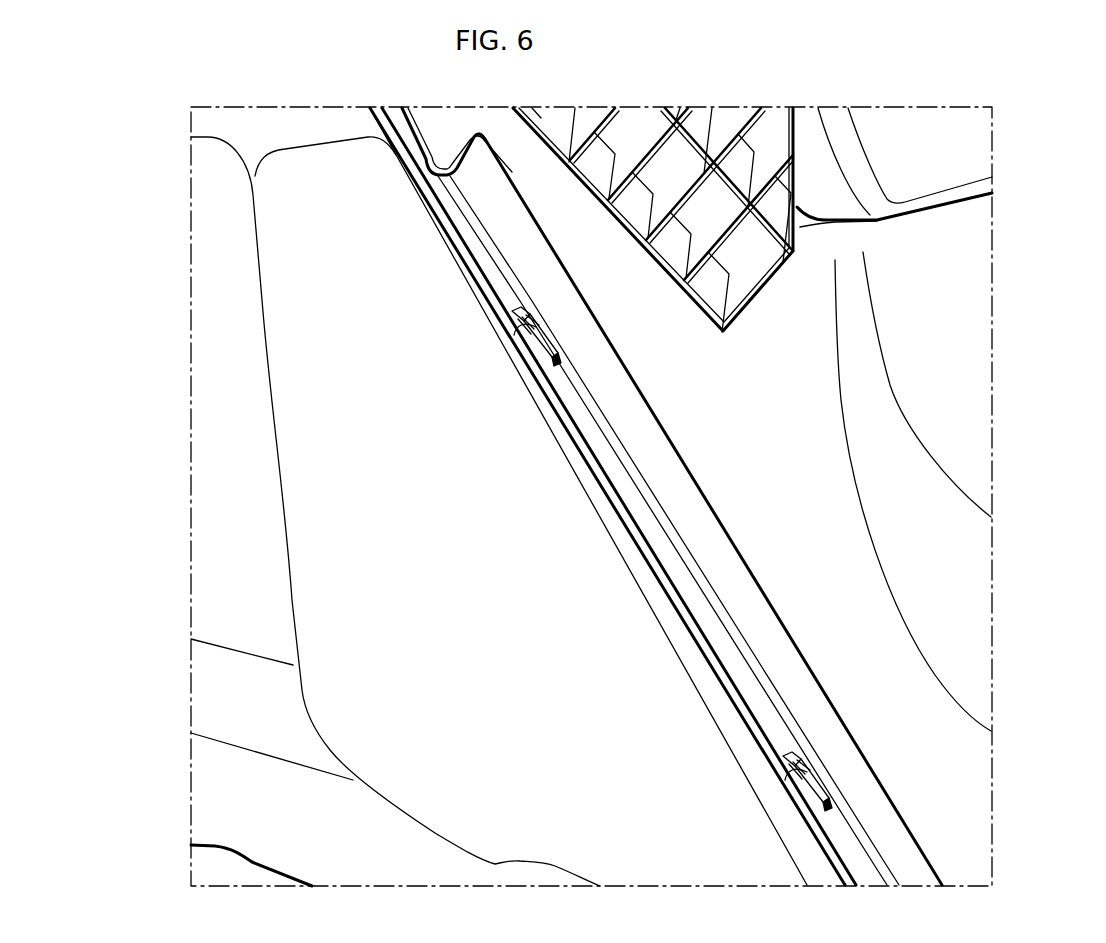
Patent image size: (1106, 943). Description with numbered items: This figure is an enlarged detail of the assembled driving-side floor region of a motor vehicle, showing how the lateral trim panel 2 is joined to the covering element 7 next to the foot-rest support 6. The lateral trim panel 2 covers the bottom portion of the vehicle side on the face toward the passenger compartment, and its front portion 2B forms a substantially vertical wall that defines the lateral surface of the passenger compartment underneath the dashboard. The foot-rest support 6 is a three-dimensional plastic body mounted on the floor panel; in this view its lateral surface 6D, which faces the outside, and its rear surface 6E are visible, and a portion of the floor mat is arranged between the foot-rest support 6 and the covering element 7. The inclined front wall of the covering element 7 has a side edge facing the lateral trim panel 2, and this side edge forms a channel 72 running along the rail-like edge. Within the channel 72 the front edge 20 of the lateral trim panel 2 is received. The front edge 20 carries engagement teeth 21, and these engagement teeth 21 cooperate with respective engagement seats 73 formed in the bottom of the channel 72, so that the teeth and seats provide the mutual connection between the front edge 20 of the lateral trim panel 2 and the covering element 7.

The lateral trim panel 2 is at (941, 419).
The front portion 2B is at (963, 445).
The foot-rest support 6 is at (336, 511).
The lateral surface 6D is at (307, 333).
The rear surface 6E is at (213, 573).
The covering element 7 is at (632, 496).
The front edge 20 is at (420, 131).
The engagement teeth 21 is at (629, 565).
The channel 72 is at (632, 496).
The engagement seats 73 is at (548, 362).